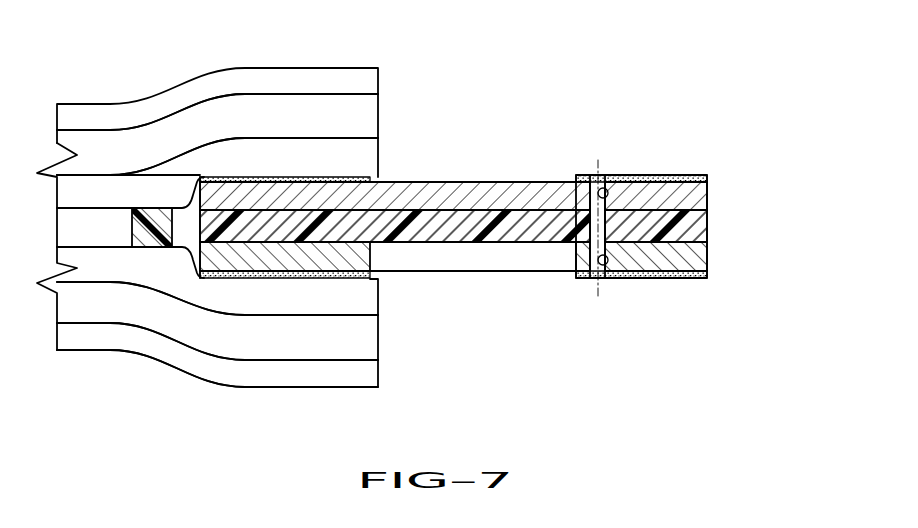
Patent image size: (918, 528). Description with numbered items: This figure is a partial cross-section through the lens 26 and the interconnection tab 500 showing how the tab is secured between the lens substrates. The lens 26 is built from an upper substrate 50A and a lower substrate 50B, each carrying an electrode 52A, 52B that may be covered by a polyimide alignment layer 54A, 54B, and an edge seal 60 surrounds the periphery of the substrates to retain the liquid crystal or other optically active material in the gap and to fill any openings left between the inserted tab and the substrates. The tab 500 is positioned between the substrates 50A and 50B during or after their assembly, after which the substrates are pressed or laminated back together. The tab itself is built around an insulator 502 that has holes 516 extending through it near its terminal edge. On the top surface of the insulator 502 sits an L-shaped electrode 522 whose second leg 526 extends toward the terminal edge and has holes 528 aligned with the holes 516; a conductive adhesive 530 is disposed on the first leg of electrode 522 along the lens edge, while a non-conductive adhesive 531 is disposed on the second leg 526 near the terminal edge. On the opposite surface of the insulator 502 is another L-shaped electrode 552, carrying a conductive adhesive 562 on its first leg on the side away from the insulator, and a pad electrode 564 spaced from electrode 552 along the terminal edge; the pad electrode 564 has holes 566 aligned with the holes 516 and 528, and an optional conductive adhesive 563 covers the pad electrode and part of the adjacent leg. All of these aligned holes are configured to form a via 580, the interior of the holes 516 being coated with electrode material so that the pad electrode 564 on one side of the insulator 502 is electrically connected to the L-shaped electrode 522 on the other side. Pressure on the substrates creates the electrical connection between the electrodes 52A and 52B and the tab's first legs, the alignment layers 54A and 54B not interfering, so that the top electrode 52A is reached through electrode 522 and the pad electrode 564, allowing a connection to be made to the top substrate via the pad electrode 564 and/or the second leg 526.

The lens 26 is at (348, 62).
The substrate 50A is at (358, 77).
The electrode 52A is at (358, 114).
The alignment layer 54A is at (358, 152).
The alignment layer 54B is at (360, 295).
The electrode 52B is at (360, 335).
The substrate 50B is at (360, 373).
The edge seal 60 is at (143, 208).
The interconnection tab 500 is at (714, 109).
The insulator 502 is at (709, 222).
The holes 516 is at (588, 207).
The L-shaped electrode 522 is at (709, 193).
The second leg 526 is at (512, 192).
The holes 528 is at (604, 188).
The conductive adhesive 530 is at (274, 177).
The non-conductive adhesive 531 is at (693, 176).
The L-shaped electrode 552 is at (197, 280).
The conductive adhesive 562 is at (275, 278).
The conductive adhesive 563 is at (690, 278).
The pad electrode 564 is at (709, 256).
The holes 566 is at (605, 278).
The via 580 is at (590, 281).